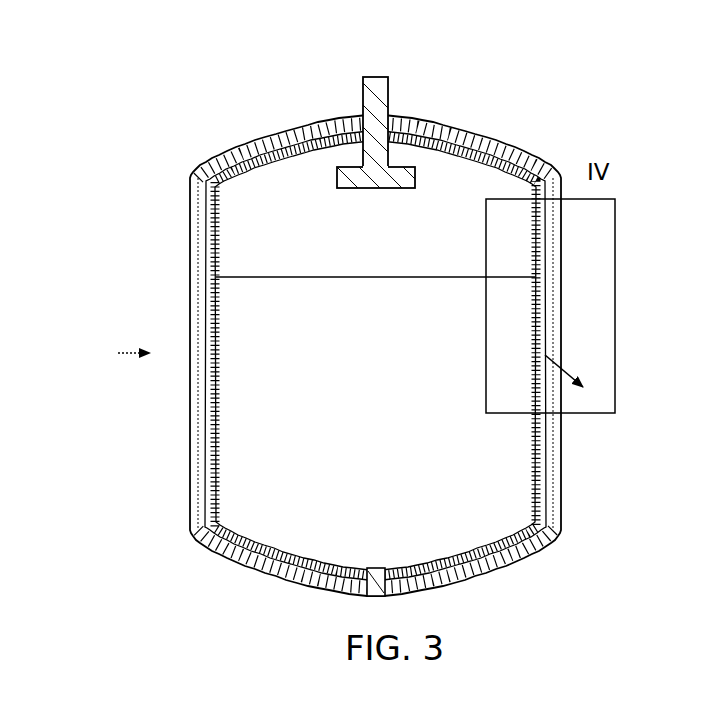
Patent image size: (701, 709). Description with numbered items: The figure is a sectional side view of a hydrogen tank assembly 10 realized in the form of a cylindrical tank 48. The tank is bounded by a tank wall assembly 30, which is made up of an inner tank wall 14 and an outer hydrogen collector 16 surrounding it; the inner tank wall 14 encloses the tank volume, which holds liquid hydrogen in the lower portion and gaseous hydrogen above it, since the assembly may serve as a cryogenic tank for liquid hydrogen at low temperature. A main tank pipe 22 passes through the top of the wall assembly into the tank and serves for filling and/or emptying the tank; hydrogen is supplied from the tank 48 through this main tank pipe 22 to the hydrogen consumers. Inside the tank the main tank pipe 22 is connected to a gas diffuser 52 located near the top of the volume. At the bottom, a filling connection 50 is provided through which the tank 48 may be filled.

The hydrogen tank assembly 10 is at (312, 303).
The inner tank wall 14 is at (242, 140).
The outer hydrogen collector 16 is at (296, 122).
The main tank pipe 22 is at (383, 77).
The tank wall assembly 30 is at (200, 277).
The cylindrical tank 48 is at (112, 354).
The filling connection 50 is at (385, 585).
The gas diffuser 52 is at (410, 160).